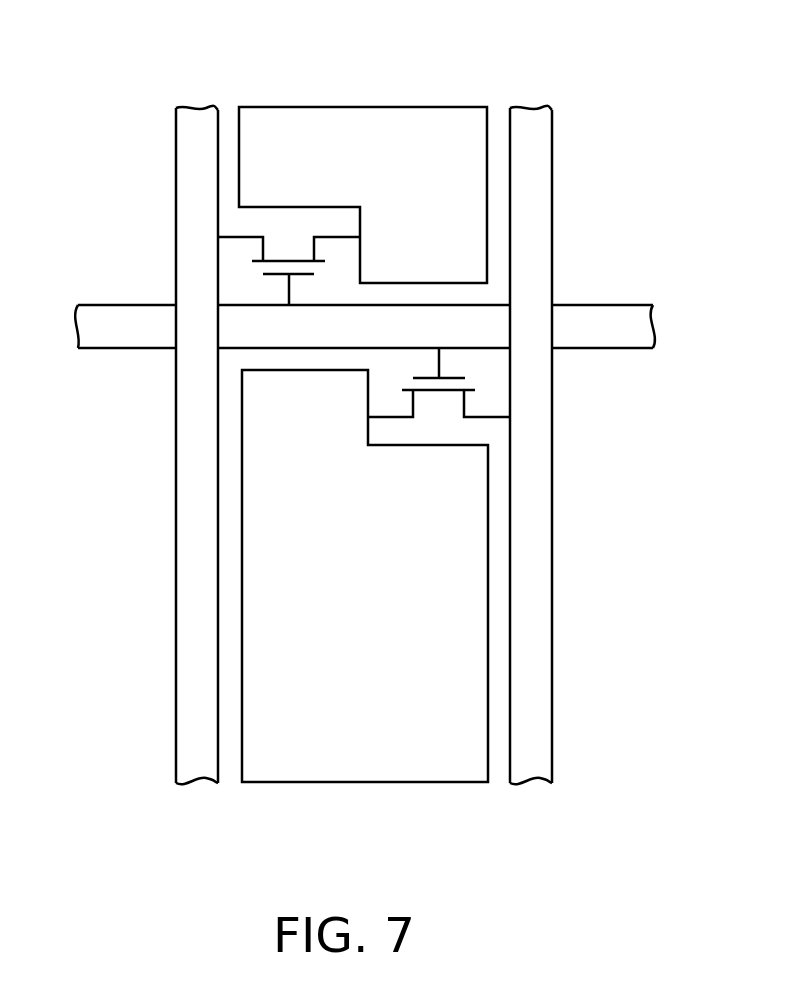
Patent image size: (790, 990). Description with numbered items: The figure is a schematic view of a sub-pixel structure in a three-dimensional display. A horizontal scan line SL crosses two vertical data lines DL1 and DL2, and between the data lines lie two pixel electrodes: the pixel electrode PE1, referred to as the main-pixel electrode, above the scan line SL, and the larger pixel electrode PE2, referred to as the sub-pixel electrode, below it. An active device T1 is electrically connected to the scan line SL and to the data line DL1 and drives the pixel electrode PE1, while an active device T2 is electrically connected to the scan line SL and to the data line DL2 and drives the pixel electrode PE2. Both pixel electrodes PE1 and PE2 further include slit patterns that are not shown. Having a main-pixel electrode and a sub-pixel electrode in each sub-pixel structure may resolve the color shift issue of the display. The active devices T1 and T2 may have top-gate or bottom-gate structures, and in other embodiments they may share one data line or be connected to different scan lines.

The data line DL1 is at (202, 122).
The data line DL2 is at (535, 122).
The scan line SL is at (594, 317).
The pixel electrode PE1 is at (362, 107).
The pixel electrode PE2 is at (488, 618).
The active device T1 is at (253, 270).
The active device T2 is at (472, 383).